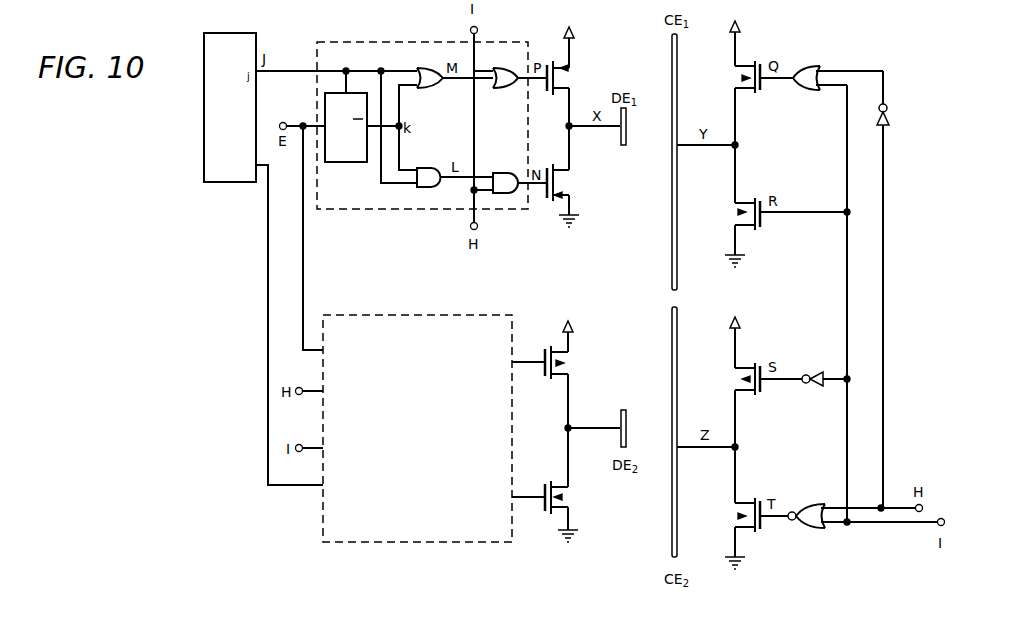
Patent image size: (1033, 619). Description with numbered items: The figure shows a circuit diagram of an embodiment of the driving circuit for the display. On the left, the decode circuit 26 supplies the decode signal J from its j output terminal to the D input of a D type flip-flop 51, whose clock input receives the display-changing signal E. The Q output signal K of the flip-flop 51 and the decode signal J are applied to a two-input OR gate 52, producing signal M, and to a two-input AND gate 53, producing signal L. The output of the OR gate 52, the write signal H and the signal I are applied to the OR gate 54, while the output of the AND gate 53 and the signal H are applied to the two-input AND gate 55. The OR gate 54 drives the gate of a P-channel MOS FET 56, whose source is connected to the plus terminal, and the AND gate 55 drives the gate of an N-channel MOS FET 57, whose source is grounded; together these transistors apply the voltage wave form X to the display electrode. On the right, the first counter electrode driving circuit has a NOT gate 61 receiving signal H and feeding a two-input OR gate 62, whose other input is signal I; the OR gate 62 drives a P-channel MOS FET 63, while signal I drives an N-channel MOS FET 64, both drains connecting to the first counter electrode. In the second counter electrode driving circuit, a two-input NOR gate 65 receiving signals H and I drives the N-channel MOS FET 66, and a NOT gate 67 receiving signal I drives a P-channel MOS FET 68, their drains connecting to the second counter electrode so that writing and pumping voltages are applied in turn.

The decode circuit 26 is at (230, 183).
The D type flip-flop 51 is at (362, 163).
The two-input OR gate 52 is at (430, 90).
The two-input AND gate 53 is at (447, 172).
The OR gate 54 is at (510, 88).
The two-input AND gate 55 is at (518, 175).
The P-channel MOS FET 56 is at (574, 74).
The N-channel MOS FET 57 is at (575, 190).
The NOT gate 61 is at (890, 116).
The two-input OR gate 62 is at (808, 88).
The P-channel MOS FET 63 is at (748, 78).
The N-channel MOS FET 64 is at (737, 222).
The two-input NOR gate 65 is at (814, 527).
The N-channel MOS FET 66 is at (735, 512).
The NOT gate 67 is at (814, 387).
The P-channel MOS FET 68 is at (735, 375).